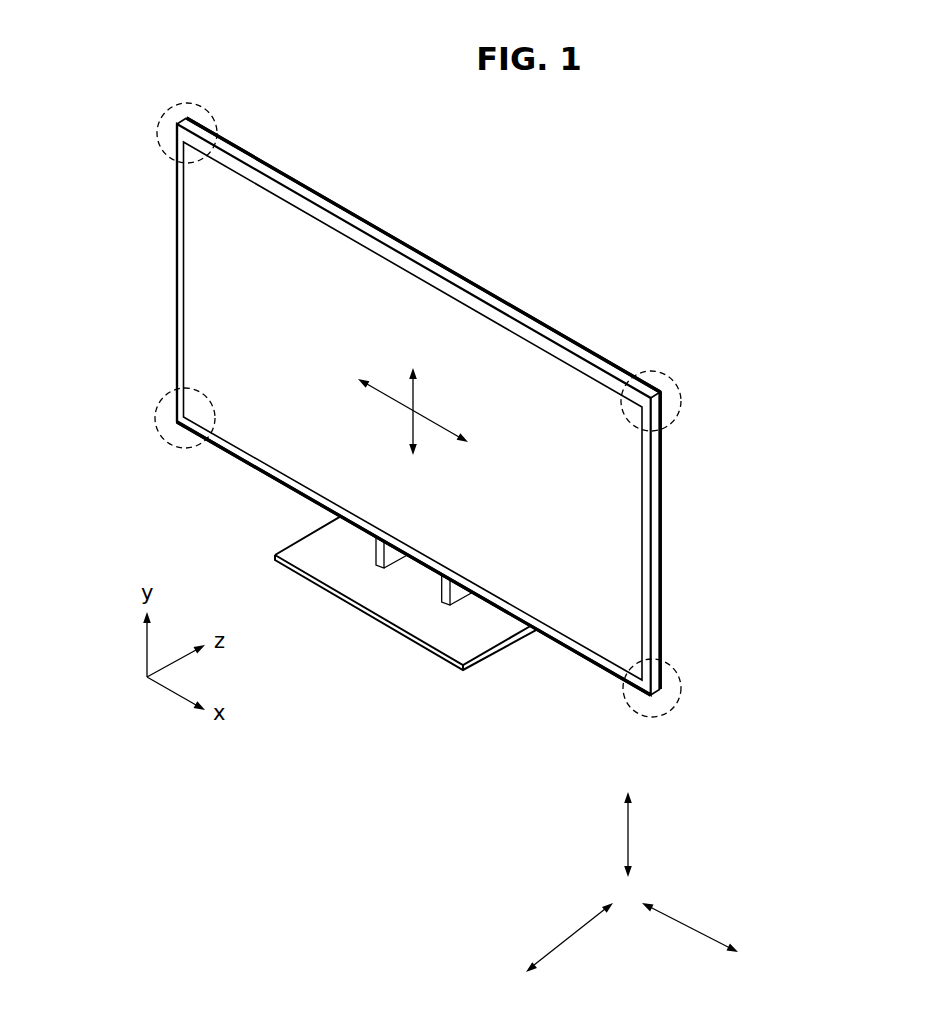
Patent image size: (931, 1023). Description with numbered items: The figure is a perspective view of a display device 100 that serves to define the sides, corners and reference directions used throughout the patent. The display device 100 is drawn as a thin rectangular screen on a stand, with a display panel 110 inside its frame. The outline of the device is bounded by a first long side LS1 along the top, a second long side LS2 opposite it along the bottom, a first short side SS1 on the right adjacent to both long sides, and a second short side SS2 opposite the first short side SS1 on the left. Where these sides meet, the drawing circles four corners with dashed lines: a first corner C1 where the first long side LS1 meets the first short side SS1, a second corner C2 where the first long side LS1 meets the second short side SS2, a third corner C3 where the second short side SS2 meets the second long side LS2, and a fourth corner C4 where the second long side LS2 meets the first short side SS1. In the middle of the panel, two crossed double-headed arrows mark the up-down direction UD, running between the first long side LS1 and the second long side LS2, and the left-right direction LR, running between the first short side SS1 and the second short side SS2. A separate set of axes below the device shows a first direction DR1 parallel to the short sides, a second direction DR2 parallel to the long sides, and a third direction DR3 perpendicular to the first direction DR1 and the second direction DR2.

The display device 100 is at (462, 268).
The display panel 110 is at (202, 357).
The first short side SS1 is at (642, 548).
The second short side SS2 is at (183, 308).
The first long side LS1 is at (530, 341).
The second long side LS2 is at (273, 477).
The first corner C1 is at (669, 401).
The second corner C2 is at (173, 133).
The third corner C3 is at (171, 418).
The fourth corner C4 is at (670, 688).
The up-down direction UD is at (414, 398).
The left-right direction LR is at (426, 418).
The first direction DR1 is at (714, 938).
The second direction DR2 is at (627, 819).
The third direction DR3 is at (555, 952).